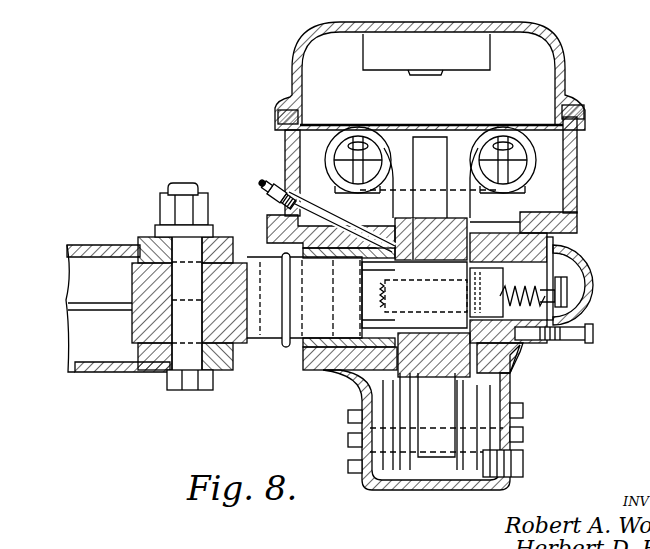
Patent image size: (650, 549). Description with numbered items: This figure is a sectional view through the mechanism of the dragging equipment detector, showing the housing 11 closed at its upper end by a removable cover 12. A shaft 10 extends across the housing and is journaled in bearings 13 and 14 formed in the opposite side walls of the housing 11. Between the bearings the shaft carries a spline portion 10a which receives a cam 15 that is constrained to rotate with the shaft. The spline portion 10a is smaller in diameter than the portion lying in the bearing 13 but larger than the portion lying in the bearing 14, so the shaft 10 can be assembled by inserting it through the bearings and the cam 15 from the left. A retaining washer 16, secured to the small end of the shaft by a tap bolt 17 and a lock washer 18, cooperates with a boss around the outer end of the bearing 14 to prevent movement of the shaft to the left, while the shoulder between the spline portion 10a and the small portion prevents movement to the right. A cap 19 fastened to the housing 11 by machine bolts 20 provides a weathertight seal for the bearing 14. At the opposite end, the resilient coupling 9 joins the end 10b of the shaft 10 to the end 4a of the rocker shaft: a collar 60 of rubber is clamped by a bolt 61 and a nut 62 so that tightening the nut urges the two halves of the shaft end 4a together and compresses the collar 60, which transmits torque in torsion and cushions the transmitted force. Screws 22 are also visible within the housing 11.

The end of the rocker shaft 4a is at (108, 372).
The resilient coupling 9 is at (158, 392).
The shaft 10 is at (262, 338).
The spline portion 10a is at (513, 348).
The end of the shaft 10b is at (130, 352).
The housing 11 is at (577, 173).
The cover 12 is at (563, 67).
The bearing 13 is at (318, 370).
The bearing 14 is at (550, 243).
The cam 15 is at (473, 210).
The retaining washer 16 is at (553, 267).
The tap bolt 17 is at (565, 300).
The lock washer 18 is at (567, 283).
The cap 19 is at (586, 315).
The machine bolts 20 is at (590, 340).
The terminal screws 22 is at (347, 130).
The collar 60 is at (262, 236).
The bolt 61 is at (185, 183).
The nut 62 is at (160, 209).